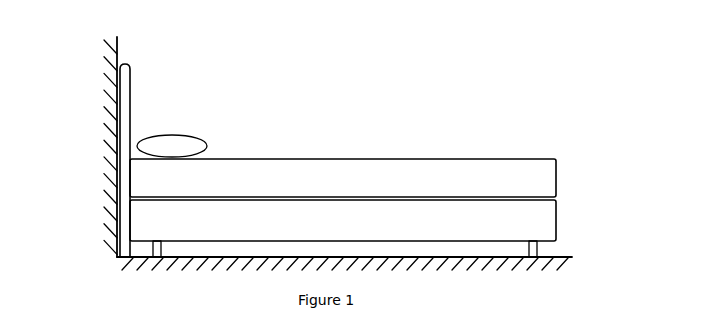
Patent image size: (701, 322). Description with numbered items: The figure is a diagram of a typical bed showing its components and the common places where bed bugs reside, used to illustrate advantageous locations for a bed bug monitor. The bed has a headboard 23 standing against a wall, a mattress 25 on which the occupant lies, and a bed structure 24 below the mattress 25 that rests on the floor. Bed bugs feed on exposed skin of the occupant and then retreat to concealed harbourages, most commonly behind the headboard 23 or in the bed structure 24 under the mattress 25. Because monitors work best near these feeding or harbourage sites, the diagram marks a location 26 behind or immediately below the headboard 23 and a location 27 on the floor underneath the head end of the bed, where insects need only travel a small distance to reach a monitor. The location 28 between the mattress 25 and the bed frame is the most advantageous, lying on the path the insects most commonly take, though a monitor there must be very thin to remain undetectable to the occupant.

The headboard 23 is at (119, 83).
The bed structure 24 is at (543, 228).
The mattress 25 is at (543, 180).
The location behind or immediately below the headboard 26 is at (128, 195).
The location on the floor underneath the head end of the bed 27 is at (148, 245).
The location between the mattress and the bed frame 28 is at (147, 197).